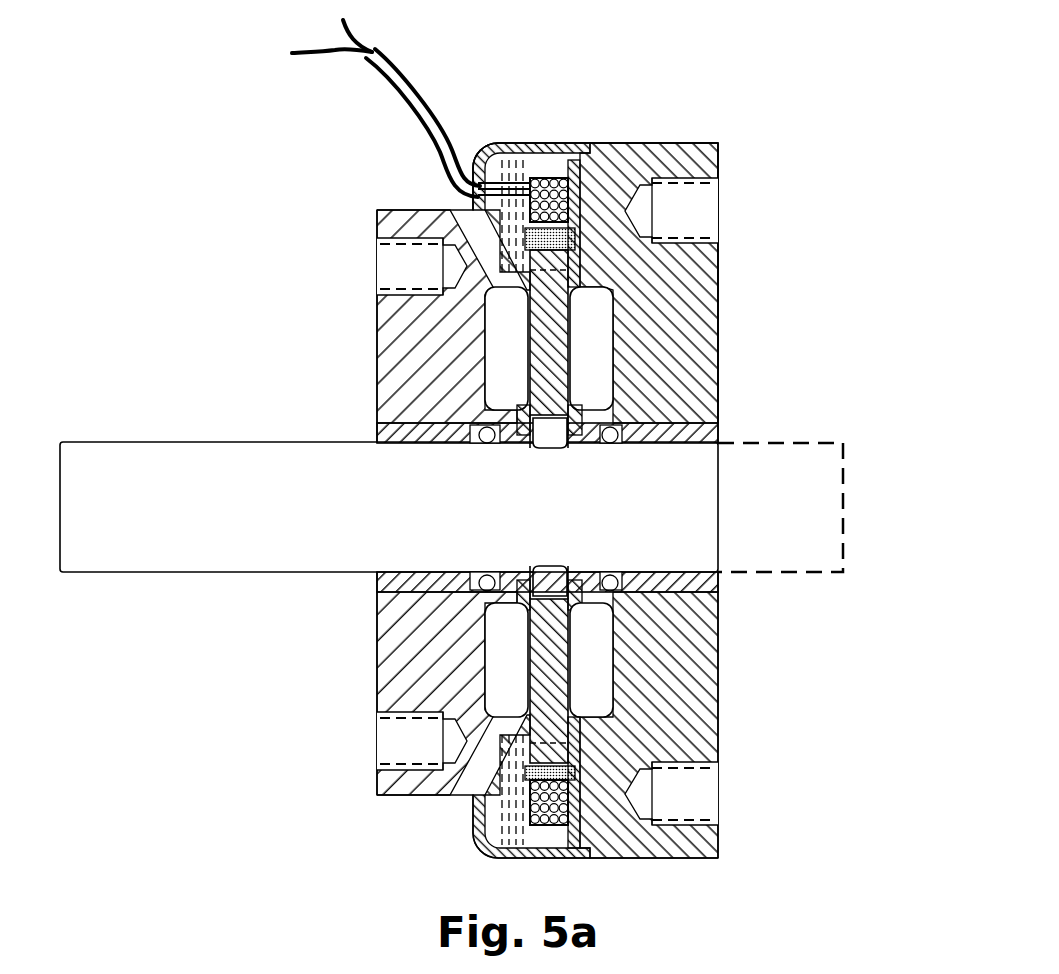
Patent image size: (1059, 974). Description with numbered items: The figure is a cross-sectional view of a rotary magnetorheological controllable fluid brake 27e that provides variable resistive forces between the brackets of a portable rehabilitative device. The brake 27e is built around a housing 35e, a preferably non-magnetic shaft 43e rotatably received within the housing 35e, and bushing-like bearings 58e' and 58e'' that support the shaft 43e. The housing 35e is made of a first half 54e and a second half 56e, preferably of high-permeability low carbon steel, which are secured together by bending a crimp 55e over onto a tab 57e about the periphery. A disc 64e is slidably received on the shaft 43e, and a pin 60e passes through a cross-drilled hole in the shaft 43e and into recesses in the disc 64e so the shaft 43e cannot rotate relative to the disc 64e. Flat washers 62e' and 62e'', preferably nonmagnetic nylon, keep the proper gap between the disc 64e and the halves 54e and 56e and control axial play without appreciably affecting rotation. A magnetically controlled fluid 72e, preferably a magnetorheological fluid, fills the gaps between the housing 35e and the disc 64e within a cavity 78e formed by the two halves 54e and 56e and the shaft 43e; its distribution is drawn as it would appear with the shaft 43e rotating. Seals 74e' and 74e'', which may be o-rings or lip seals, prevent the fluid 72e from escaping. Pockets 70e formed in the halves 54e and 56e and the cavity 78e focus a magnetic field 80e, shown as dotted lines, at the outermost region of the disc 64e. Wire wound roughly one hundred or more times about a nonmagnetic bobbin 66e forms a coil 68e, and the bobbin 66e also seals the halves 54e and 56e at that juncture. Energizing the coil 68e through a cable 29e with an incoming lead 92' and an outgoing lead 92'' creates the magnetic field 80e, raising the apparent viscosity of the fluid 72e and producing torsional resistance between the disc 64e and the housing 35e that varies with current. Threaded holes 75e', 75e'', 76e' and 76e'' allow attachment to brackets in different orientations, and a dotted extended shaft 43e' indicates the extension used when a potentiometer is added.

The controllable fluid brake 27e is at (375, 220).
The cable 29e is at (400, 62).
The incoming lead 92' is at (297, 38).
The outgoing lead 92'' is at (383, 29).
The housing 35e is at (668, 142).
The first half 54e is at (612, 150).
The bobbin 66e is at (575, 168).
The coil 68e is at (538, 170).
The threaded hole 76e'' is at (725, 210).
The threaded hole 76e' is at (722, 793).
The threaded hole 75e'' is at (368, 281).
The threaded hole 75e' is at (347, 744).
The cavity 78e is at (598, 310).
The pockets 70e is at (598, 640).
The disc 64e is at (563, 340).
The magnetically controlled fluid 72e is at (593, 723).
The bearing 58e'' is at (601, 410).
The bearing 58e' is at (530, 537).
The shaft 43e is at (389, 507).
The extended shaft 43e' is at (797, 492).
The flat washer 62e' is at (481, 442).
The flat washer 62e'' is at (615, 442).
The pin 60e is at (547, 440).
The seal 74e' is at (456, 549).
The seal 74e'' is at (651, 550).
The second half 56e is at (378, 628).
The tab 57e is at (483, 808).
The crimp 55e is at (480, 843).
The magnetic field 80e is at (630, 843).